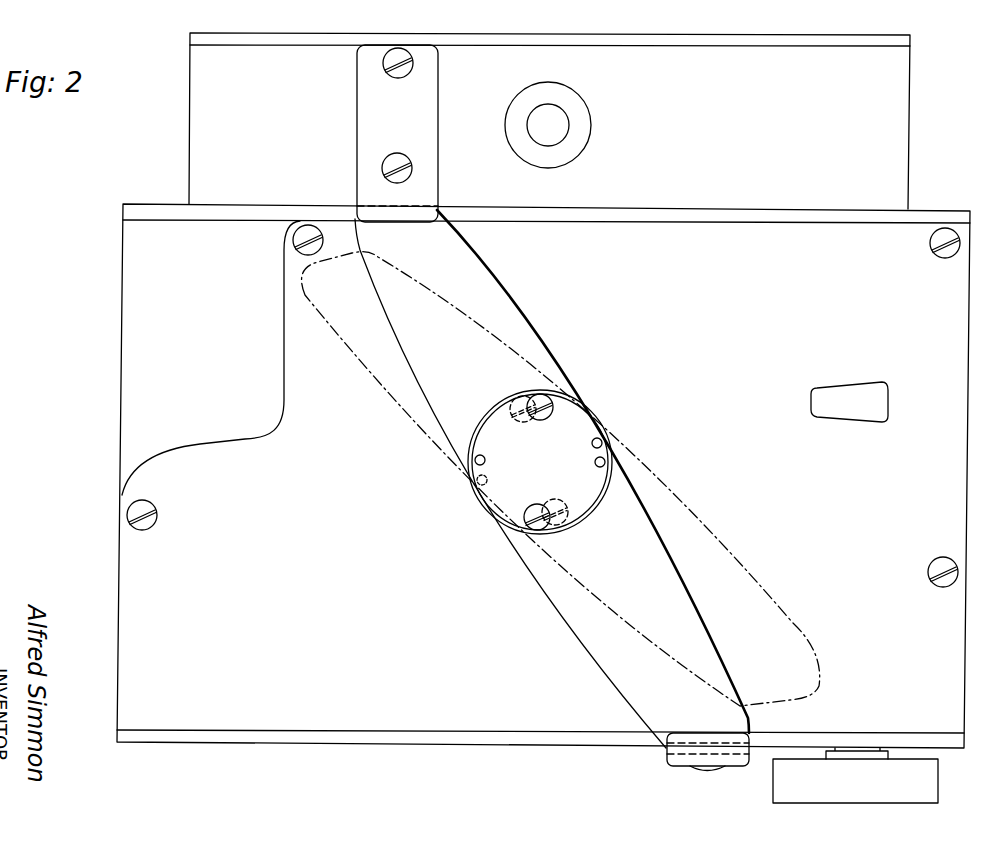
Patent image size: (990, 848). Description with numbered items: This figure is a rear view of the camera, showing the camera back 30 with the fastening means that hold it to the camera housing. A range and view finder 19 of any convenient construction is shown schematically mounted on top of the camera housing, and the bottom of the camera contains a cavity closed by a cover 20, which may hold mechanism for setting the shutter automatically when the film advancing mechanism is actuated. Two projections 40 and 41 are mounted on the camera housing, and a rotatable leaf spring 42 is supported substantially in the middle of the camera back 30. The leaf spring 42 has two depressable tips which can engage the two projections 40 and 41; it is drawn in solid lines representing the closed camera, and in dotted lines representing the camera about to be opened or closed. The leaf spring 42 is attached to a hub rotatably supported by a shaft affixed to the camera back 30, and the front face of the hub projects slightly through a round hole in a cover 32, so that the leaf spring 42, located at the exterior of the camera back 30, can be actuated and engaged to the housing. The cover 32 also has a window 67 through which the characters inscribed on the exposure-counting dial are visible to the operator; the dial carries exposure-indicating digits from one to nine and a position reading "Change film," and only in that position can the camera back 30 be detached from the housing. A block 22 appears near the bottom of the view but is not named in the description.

The range and view finder 19 is at (643, 42).
The cover 20 is at (315, 743).
The block 22 is at (773, 777).
The camera back 30 is at (126, 322).
The cover 32 is at (290, 335).
The projection 40 is at (365, 115).
The projection 41 is at (667, 757).
The rotatable leaf spring 42 is at (488, 273).
The window 67 is at (869, 383).